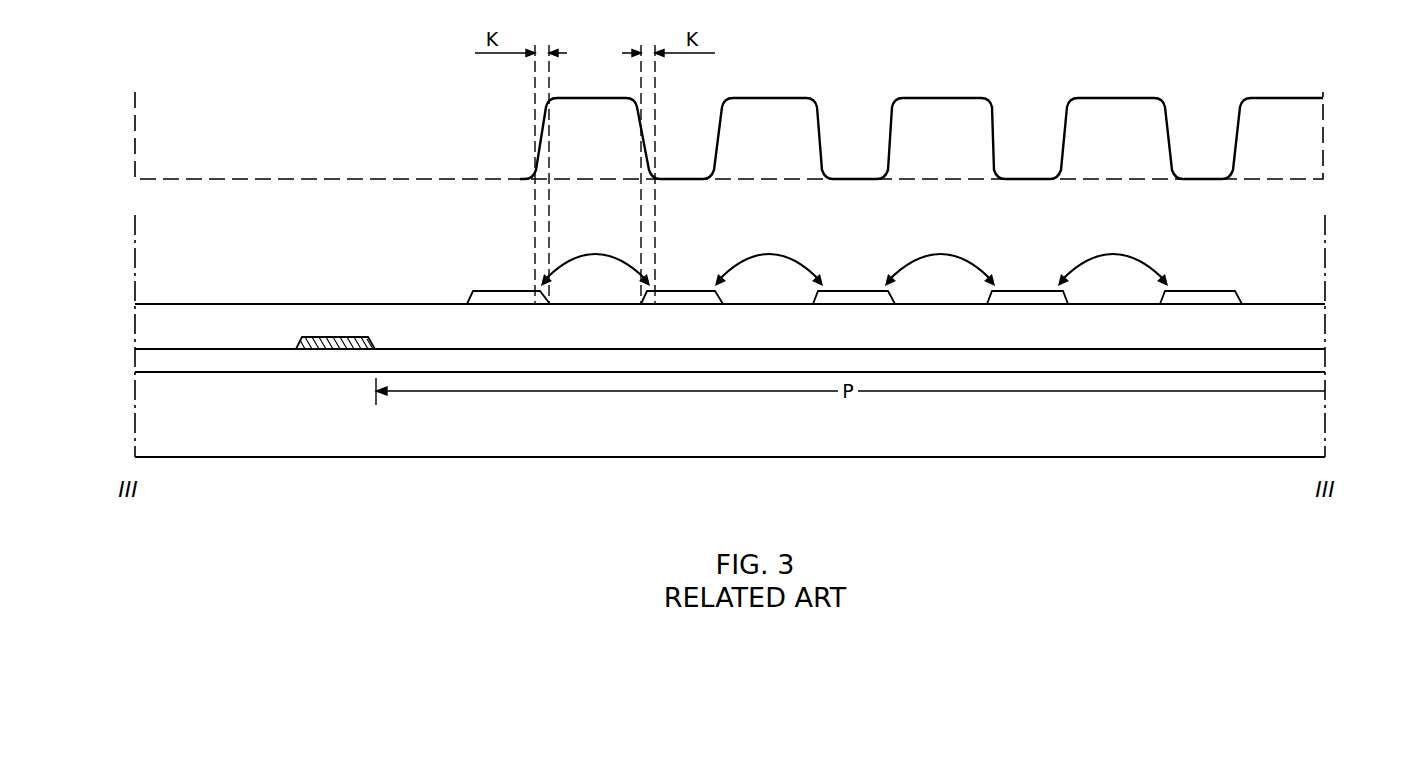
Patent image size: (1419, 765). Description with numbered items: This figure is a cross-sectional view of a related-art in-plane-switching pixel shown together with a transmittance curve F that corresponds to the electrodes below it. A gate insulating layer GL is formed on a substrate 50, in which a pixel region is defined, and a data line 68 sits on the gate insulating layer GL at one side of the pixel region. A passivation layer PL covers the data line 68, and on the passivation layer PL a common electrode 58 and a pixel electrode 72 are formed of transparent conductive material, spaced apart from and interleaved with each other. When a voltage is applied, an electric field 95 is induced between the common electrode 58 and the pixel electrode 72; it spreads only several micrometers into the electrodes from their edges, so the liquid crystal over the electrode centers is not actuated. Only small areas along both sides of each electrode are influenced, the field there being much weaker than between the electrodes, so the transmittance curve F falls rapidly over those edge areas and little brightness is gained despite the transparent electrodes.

The substrate 50 is at (1284, 432).
The common electrode 58 is at (1188, 478).
The data line 68 is at (333, 343).
The pixel electrode 72 is at (1030, 478).
The electric field 95 is at (1140, 258).
The passivation layer PL is at (1315, 325).
The gate insulating layer GL is at (1315, 358).
The transmittance curve F is at (998, 138).